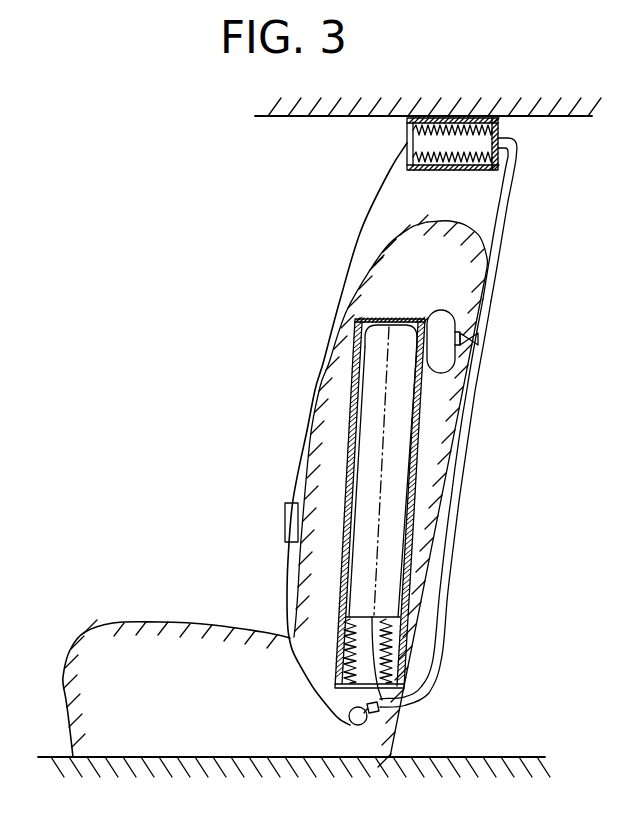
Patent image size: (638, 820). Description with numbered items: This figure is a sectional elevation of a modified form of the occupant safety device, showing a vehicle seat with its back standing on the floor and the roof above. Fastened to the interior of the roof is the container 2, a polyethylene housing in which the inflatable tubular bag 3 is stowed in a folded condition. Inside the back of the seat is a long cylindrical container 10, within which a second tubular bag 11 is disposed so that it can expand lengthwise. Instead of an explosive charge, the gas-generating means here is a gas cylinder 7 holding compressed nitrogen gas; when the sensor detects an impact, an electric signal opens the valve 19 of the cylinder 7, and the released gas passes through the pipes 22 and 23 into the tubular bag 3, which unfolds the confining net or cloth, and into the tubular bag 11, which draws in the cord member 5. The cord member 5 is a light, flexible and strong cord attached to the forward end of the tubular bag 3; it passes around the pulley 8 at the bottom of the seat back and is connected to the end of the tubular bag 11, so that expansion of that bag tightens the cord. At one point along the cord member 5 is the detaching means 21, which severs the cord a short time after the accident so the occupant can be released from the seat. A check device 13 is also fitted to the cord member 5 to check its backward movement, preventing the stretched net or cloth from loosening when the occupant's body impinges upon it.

The container 2 is at (450, 170).
The tubular bag 3 is at (456, 117).
The cord member 5 is at (305, 688).
The gas-generating means 7 is at (445, 327).
The pulley 8 is at (349, 714).
The cylindrical container 10 is at (408, 518).
The tubular bag 11 is at (408, 462).
The check device 13 is at (389, 710).
The valve 19 is at (478, 342).
The detaching means 21 is at (285, 520).
The pipe 22 is at (514, 203).
The pipe 23 is at (482, 385).